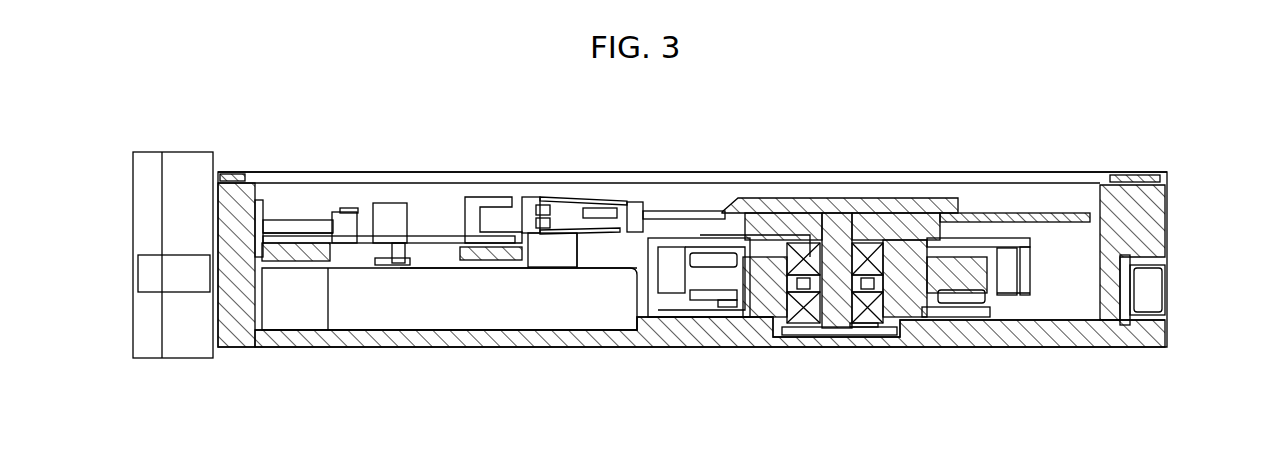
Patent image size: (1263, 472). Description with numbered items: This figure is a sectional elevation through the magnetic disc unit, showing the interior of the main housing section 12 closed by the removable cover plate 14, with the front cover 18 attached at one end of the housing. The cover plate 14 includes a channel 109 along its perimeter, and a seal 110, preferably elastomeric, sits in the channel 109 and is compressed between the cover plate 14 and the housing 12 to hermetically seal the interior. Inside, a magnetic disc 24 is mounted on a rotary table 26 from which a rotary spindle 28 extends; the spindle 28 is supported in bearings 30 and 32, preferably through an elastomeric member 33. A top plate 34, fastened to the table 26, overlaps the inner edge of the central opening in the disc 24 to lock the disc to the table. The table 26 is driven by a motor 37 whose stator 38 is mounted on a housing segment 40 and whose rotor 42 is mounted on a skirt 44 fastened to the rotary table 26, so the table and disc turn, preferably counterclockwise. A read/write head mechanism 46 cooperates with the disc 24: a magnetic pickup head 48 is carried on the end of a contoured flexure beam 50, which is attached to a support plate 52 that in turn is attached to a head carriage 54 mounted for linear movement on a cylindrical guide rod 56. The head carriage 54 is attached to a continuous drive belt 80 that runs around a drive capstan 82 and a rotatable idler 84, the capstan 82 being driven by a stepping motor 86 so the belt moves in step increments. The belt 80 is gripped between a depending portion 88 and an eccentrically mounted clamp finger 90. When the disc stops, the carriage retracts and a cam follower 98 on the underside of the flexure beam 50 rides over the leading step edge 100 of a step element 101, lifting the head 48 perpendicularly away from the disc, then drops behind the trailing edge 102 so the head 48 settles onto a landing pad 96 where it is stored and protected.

The main housing section 12 is at (550, 345).
The removable cover plate 14 is at (1160, 172).
The front cover 18 is at (205, 358).
The magnetic disc 24 is at (1011, 213).
The rotary table 26 is at (895, 238).
The rotary spindle 28 is at (853, 333).
The bearing 30 is at (878, 320).
The bearing 32 is at (925, 303).
The elastomeric member 33 is at (872, 335).
The top plate 34 is at (806, 200).
The motor 37 is at (993, 320).
The stator 38 is at (730, 302).
The housing segment 40 is at (770, 316).
The rotor 42 is at (702, 268).
The skirt 44 is at (656, 285).
The read/write head mechanism 46 is at (622, 192).
The magnetic pickup head 48 is at (646, 210).
The contoured flexure beam 50 is at (583, 208).
The support plate 52 is at (466, 196).
The head carriage 54 is at (366, 215).
The cylindrical guide rod 56 is at (297, 222).
The continuous drive belt 80 is at (347, 245).
The drive capstan 82 is at (493, 270).
The rotatable idler 84 is at (282, 265).
The stepping motor 86 is at (625, 314).
The depending portion 88 is at (377, 263).
The clamp finger 90 is at (405, 263).
The landing pad 96 is at (575, 233).
The cam follower 98 is at (598, 200).
The leading step edge 100 is at (552, 210).
The step element 101 is at (538, 200).
The trailing edge 102 is at (517, 196).
The channel 109 is at (1167, 197).
The seal 110 is at (222, 172).